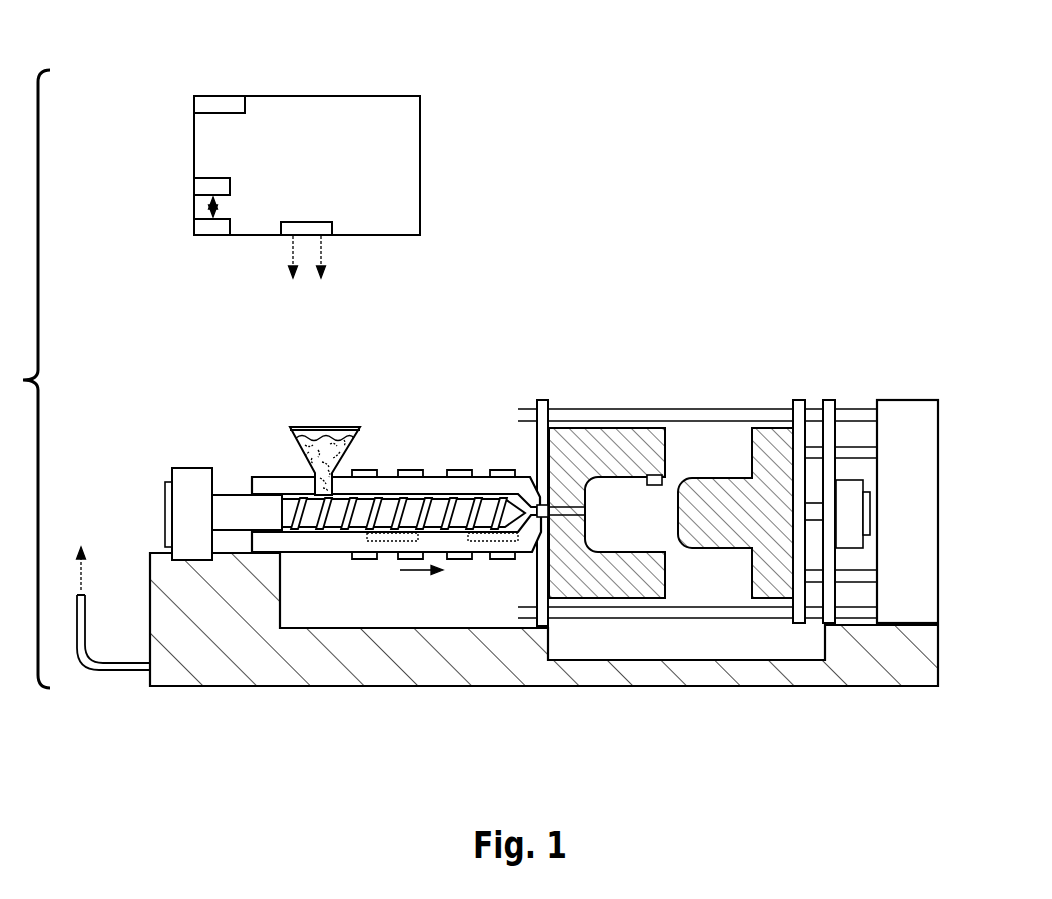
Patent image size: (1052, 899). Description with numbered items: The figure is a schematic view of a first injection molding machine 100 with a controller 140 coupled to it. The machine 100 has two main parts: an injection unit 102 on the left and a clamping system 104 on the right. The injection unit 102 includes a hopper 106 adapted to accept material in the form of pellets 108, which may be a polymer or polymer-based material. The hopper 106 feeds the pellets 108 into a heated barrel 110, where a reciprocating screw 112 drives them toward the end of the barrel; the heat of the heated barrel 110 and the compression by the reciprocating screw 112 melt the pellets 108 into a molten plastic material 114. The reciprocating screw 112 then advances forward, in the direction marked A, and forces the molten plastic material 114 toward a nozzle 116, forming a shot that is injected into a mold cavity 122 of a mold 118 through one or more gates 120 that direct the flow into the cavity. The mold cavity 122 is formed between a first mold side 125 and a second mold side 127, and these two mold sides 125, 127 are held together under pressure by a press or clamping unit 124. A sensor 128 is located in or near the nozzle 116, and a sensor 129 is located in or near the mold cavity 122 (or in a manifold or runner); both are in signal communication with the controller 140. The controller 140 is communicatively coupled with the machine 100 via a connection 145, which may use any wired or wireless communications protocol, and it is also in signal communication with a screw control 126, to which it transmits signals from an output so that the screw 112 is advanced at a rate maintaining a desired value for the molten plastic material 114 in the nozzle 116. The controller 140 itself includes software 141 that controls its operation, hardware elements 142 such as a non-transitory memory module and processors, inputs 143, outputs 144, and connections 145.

The first injection molding machine 100 is at (591, 182).
The injection unit 102 is at (374, 590).
The clamping system 104 is at (688, 689).
The hopper 106 is at (335, 426).
The pellets 108 is at (320, 453).
The heated barrel 110 is at (388, 471).
The reciprocating screw 112 is at (332, 517).
The molten plastic material 114 is at (437, 500).
The nozzle 116 is at (554, 498).
The mold 118 is at (667, 418).
The gate 120 is at (577, 506).
The mold cavity 122 is at (628, 486).
The clamping unit 124 is at (882, 399).
The first mold side 125 is at (607, 590).
The screw control 126 is at (466, 592).
The second mold side 127 is at (733, 535).
The sensor 128 is at (536, 505).
The sensor 129 is at (666, 477).
The controller 140 is at (370, 96).
The software 141 is at (200, 187).
The hardware elements 142 is at (200, 229).
The inputs 143 is at (200, 102).
The outputs 144 is at (329, 234).
The connection 145 is at (288, 256).
The direction of material flow A is at (421, 582).